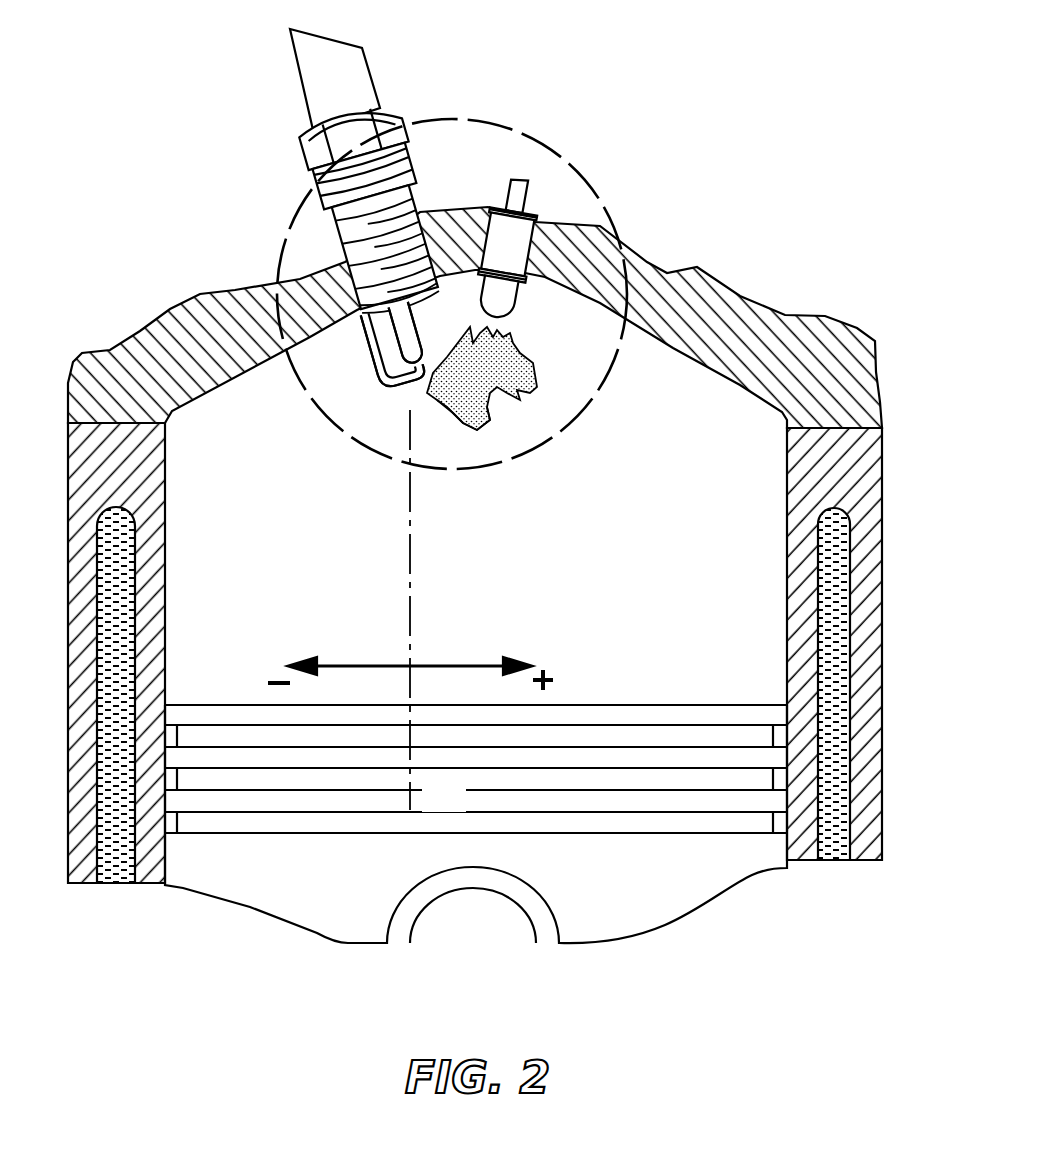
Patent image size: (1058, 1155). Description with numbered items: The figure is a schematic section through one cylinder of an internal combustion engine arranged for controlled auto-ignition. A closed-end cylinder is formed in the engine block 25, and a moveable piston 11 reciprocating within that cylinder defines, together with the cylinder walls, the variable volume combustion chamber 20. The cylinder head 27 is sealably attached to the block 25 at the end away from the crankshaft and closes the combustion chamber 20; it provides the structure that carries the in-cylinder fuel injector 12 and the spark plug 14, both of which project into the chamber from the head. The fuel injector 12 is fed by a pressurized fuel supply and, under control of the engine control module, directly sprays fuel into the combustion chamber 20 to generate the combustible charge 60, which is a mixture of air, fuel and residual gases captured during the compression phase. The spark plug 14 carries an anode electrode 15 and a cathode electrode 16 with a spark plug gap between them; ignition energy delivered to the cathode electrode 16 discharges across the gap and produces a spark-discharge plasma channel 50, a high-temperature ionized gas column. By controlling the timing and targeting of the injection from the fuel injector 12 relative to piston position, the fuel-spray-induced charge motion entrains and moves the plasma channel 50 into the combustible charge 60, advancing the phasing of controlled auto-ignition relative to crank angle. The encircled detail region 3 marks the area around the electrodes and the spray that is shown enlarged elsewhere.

The detail region of FIG. 3 is at (572, 158).
The piston 11 is at (723, 857).
The in-cylinder fuel injector 12 is at (533, 227).
The spark plug 14 is at (333, 219).
The anode electrode 15 is at (388, 372).
The cathode electrode 16 is at (383, 340).
The variable volume combustion chamber 20 is at (626, 590).
The engine block 25 is at (870, 512).
The cylinder head 27 is at (740, 315).
The spark-discharge plasma channel 50 is at (447, 408).
The combustible charge 60 is at (527, 398).